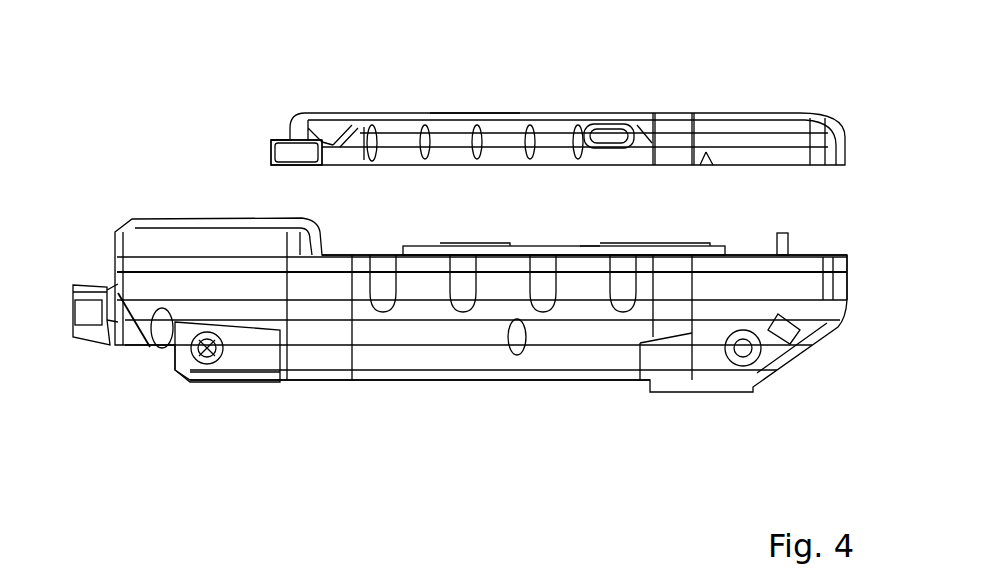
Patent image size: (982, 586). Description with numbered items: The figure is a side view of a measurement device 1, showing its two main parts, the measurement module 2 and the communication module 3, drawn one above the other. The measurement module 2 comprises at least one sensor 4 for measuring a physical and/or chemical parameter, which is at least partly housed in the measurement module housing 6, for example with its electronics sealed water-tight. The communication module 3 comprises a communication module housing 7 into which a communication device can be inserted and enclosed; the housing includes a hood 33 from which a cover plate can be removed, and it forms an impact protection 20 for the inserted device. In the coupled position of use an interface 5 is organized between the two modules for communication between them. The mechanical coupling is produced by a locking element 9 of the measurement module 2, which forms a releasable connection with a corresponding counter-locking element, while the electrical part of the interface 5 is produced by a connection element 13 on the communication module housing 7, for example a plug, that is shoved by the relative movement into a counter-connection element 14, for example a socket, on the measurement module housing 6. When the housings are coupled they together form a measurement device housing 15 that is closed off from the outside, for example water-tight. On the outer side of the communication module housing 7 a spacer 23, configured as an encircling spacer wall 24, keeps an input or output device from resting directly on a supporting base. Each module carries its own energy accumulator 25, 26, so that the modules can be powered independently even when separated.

The measurement device 1 is at (116, 120).
The measurement module 2 is at (104, 242).
The communication module 3 is at (266, 120).
The sensor 4 is at (82, 370).
The interface 5 is at (348, 227).
The measurement module housing 6 is at (295, 380).
The communication module housing 7 is at (352, 122).
The locking element 9 is at (588, 248).
The connection element 13 is at (290, 152).
The counter-connection element 14 is at (310, 240).
The measurement device housing 15 is at (866, 242).
The impact protection 20 is at (470, 95).
The spacer 23 is at (655, 115).
The spacer wall 24 is at (707, 92).
The energy accumulator 25 is at (520, 408).
The energy accumulator 26 is at (535, 95).
The hood 33 is at (388, 136).